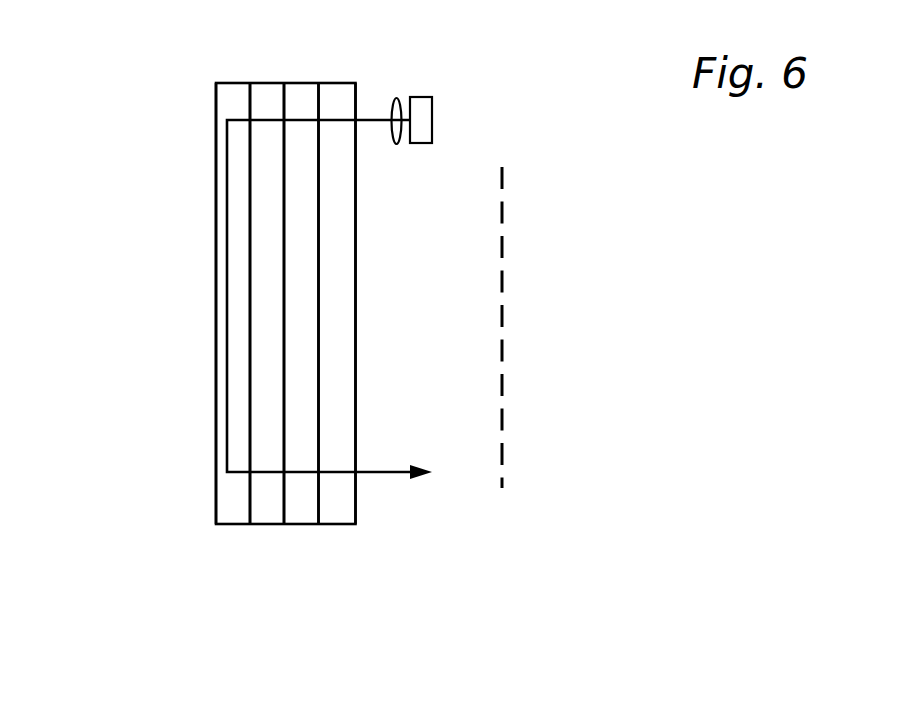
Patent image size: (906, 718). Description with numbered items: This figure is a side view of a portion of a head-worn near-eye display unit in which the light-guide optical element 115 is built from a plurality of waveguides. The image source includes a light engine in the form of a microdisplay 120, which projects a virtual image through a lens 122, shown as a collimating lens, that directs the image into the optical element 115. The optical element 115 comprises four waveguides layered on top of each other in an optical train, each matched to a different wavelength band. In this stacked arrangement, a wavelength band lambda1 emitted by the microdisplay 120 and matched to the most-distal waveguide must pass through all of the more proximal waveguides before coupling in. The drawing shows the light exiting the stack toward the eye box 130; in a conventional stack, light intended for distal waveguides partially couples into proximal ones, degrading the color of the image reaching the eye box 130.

The light-guide optical element 115 is at (110, 225).
The microdisplay 120 is at (427, 97).
The lens 122 is at (394, 98).
The eye box 130 is at (503, 287).
The wavelength band lambda1 is at (303, 120).